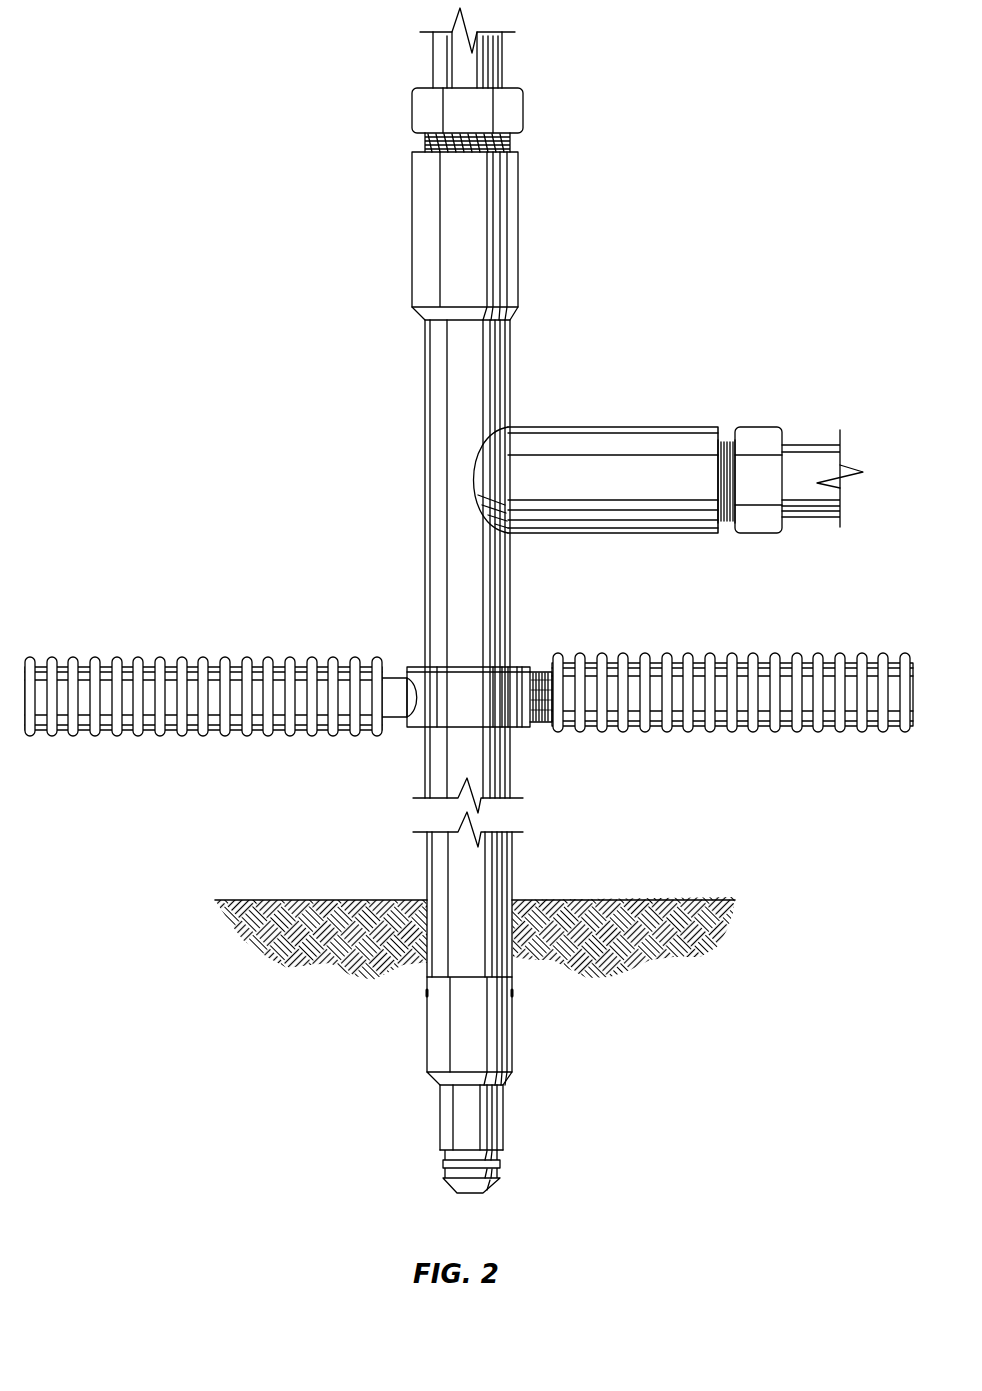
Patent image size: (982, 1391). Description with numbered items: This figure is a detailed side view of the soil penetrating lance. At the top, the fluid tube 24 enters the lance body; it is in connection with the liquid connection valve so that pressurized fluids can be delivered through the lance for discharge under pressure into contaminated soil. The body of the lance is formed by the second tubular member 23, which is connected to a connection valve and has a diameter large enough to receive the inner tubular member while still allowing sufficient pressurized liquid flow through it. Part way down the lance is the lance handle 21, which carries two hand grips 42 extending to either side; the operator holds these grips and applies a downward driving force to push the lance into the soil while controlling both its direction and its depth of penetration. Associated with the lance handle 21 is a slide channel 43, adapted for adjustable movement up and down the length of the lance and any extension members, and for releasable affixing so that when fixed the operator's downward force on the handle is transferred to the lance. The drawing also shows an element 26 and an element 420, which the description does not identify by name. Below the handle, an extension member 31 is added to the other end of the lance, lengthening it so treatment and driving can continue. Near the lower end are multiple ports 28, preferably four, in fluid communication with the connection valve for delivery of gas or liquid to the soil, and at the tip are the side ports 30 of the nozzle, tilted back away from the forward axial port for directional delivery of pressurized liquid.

The fluid tube 24 is at (503, 52).
The coupling body 26 is at (518, 232).
The second tubular member 23 is at (425, 578).
The lance handle 21 is at (520, 663).
The slide channel 43 is at (405, 722).
The threaded connector 420 is at (537, 727).
The hand grips 42 is at (116, 657).
The extension member 31 is at (513, 860).
The ports 28 is at (427, 993).
The side ports 30 is at (497, 1153).